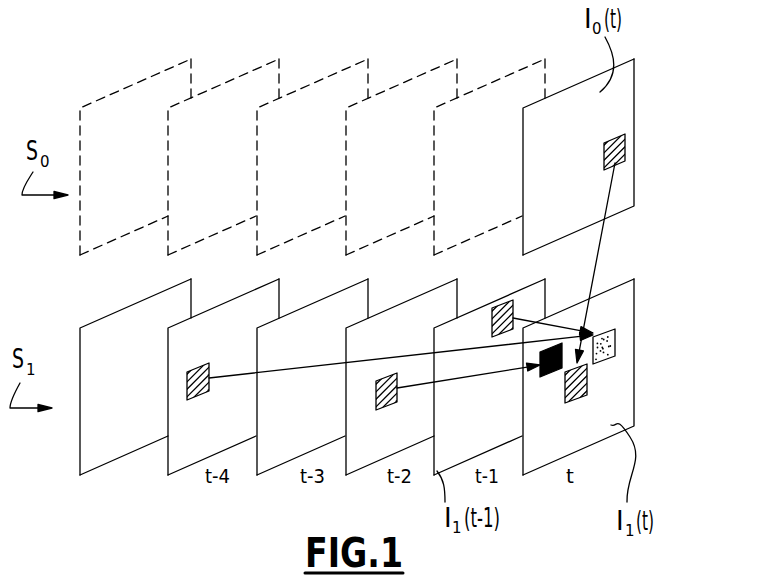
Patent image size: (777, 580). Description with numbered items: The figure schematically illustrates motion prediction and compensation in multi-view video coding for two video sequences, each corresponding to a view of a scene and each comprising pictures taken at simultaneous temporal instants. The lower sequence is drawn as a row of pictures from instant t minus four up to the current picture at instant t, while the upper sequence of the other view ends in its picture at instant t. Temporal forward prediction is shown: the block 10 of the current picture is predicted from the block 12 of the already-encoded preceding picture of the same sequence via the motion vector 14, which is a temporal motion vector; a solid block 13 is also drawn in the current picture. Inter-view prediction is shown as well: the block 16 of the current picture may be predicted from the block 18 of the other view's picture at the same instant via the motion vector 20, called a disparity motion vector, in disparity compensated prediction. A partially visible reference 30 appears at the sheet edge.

The block of current picture 10 is at (616, 339).
The block of reference picture 12 is at (492, 318).
The co-located block in image I1(t) 13 is at (549, 377).
The temporal motion vector 14 is at (570, 328).
The block of picture I1(t) 16 is at (578, 397).
The block of picture I0(t) 18 is at (626, 146).
The disparity motion vector 20 is at (598, 248).
The partially visible reference 30 is at (50, 569).